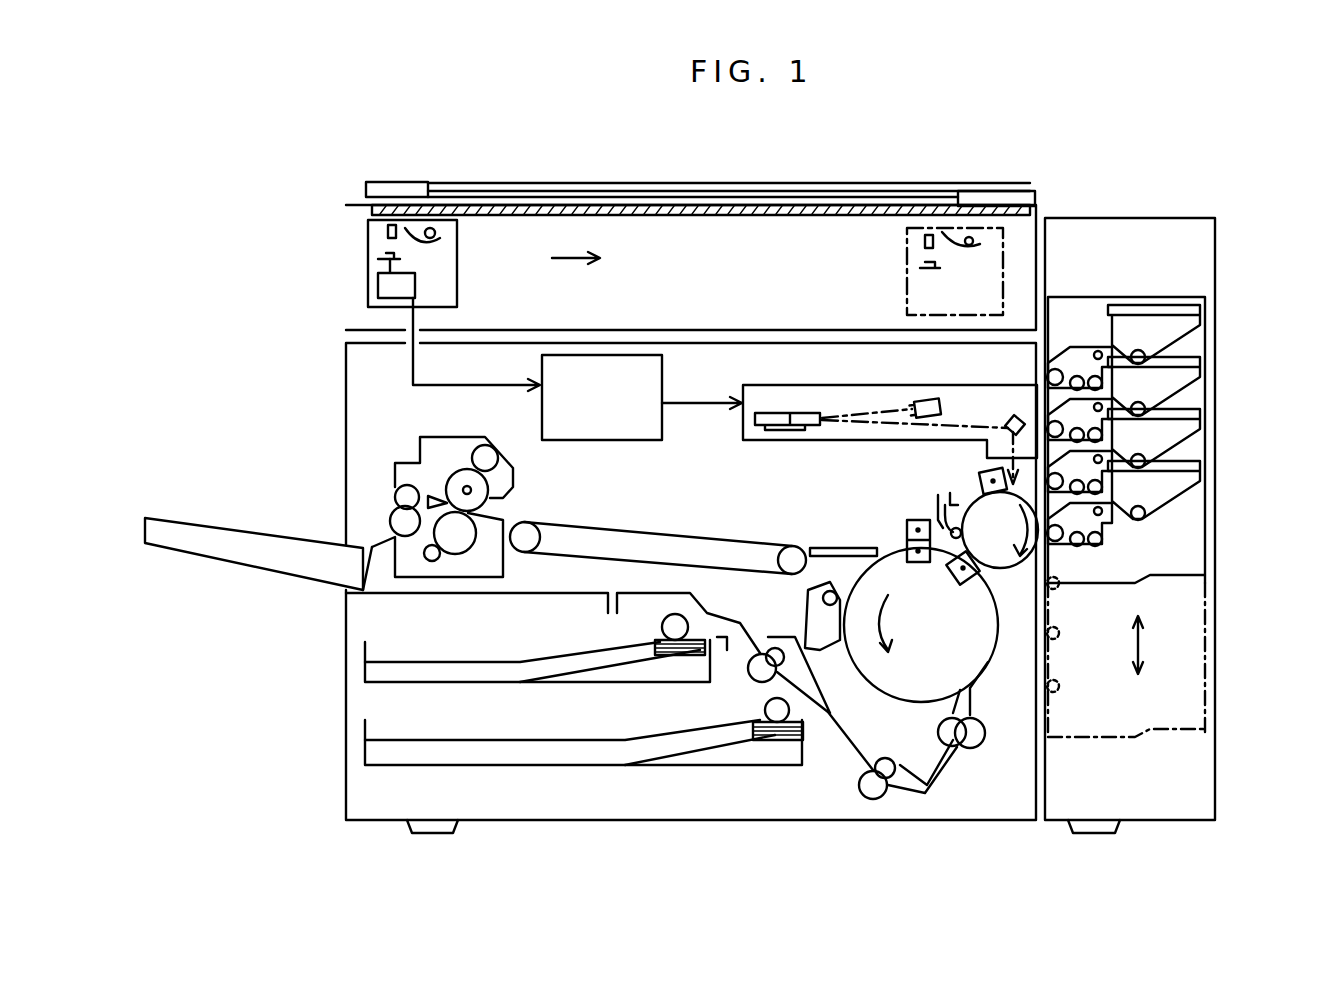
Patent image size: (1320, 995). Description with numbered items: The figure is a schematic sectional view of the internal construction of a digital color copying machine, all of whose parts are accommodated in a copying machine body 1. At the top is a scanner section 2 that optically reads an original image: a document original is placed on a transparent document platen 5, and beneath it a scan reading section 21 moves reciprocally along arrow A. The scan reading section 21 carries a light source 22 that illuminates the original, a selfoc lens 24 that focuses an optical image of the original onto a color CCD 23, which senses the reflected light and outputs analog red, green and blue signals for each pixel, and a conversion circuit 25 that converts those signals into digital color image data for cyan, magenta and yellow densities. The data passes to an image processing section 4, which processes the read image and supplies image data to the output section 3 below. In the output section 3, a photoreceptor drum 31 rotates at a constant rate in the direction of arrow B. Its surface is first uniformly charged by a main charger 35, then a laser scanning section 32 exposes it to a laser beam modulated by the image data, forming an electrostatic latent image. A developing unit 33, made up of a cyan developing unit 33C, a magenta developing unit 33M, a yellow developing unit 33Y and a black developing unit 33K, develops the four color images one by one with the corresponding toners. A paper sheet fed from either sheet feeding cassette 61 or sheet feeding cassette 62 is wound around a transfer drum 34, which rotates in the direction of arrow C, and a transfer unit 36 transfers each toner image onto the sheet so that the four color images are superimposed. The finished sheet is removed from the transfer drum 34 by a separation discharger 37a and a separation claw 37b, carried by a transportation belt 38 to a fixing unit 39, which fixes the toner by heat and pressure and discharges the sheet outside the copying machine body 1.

The copying machine body 1 is at (388, 168).
The scanner section 2 is at (1020, 268).
The output section 3 is at (353, 419).
The image processing section 4 is at (645, 392).
The transparent document platen 5 is at (793, 212).
The scan reading section 21 is at (457, 296).
The light source 22 is at (430, 245).
The color CCD 23 is at (392, 257).
The selfoc lens 24 is at (388, 233).
The conversion circuit 25 is at (388, 292).
The photoreceptor drum 31 is at (990, 568).
The laser scanning section 32 is at (800, 385).
The developing unit 33 is at (1175, 218).
The black developing unit 33K is at (1175, 322).
The yellow developing unit 33Y is at (1179, 393).
The magenta developing unit 33M is at (1183, 441).
The cyan developing unit 33C is at (1180, 488).
The transfer drum 34 is at (982, 653).
The main charger 35 is at (985, 478).
The transfer unit 36 is at (955, 572).
The separation discharger 37a is at (883, 548).
The separation claw 37b is at (873, 547).
The transportation belt 38 is at (672, 535).
The fixing unit 39 is at (536, 492).
The sheet feeding cassette 61 is at (586, 688).
The sheet feeding cassette 62 is at (586, 765).